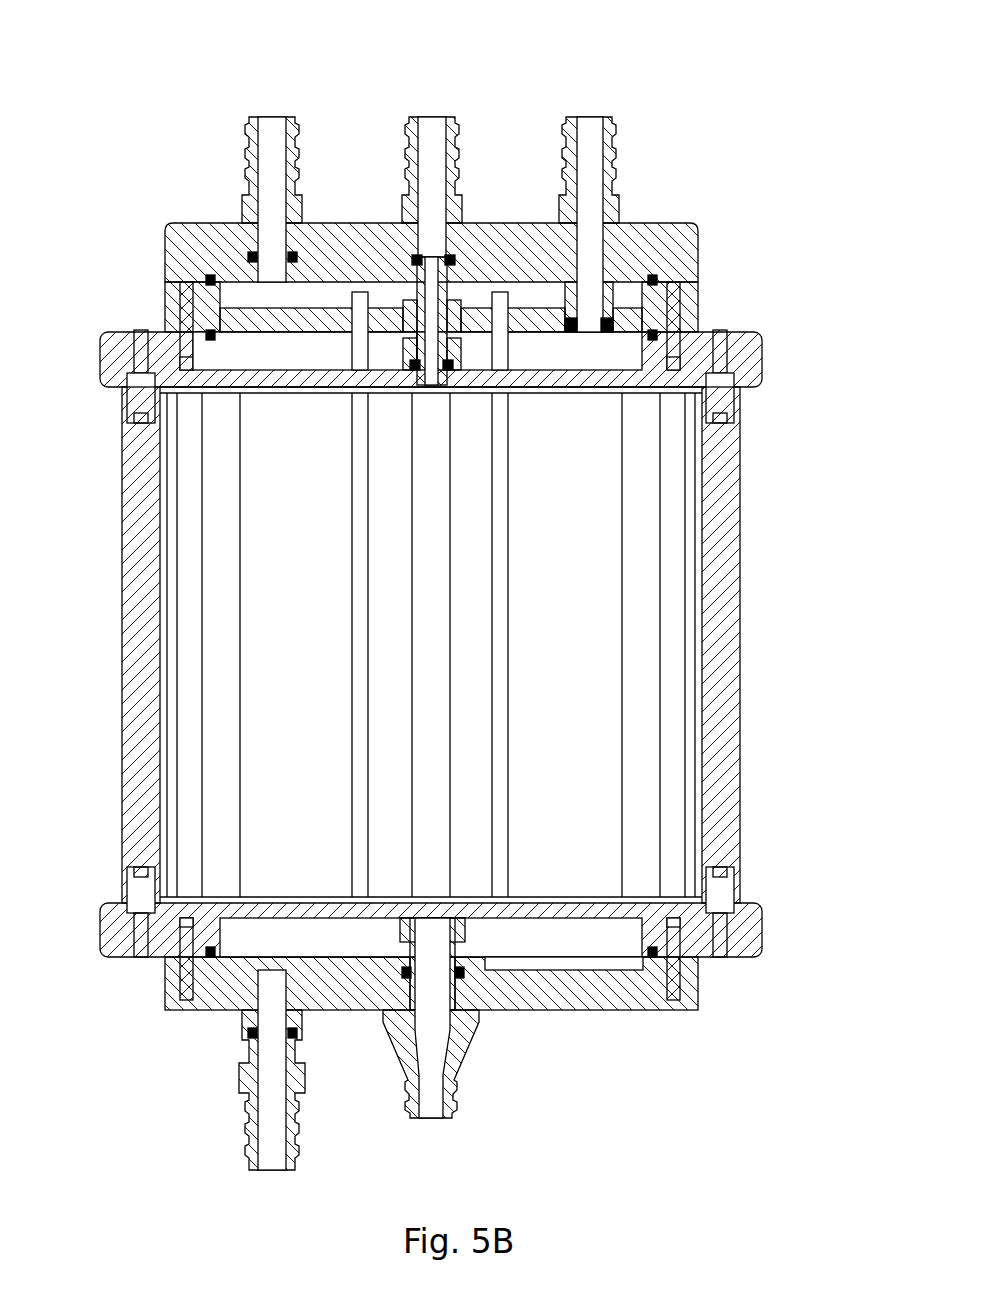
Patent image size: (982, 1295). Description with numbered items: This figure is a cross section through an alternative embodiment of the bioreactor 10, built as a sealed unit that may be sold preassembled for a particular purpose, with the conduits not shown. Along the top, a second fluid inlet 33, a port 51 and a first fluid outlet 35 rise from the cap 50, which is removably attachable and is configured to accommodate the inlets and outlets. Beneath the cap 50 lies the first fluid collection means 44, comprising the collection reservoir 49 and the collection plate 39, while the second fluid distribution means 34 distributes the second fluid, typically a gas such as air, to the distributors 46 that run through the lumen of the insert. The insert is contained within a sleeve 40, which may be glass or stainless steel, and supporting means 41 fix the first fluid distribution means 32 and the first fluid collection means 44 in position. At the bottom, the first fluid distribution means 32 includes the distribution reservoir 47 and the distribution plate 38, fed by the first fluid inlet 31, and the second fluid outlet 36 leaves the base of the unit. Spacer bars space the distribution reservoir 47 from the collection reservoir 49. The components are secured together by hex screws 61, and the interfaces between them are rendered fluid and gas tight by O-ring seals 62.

The bioreactor 10 is at (718, 142).
The first fluid inlet 31 is at (247, 1142).
The first fluid distribution means 32 is at (590, 933).
The second fluid inlet 33 is at (275, 117).
The second fluid distribution means 34 is at (653, 278).
The first fluid outlet 35 is at (590, 120).
The second fluid outlet 36 is at (457, 1098).
The distribution plate 38 is at (520, 880).
The collection plate 39 is at (227, 392).
The sleeve 40 is at (192, 660).
The supporting means 41 is at (745, 690).
The first fluid collection means 44 is at (624, 348).
The distributors 46 is at (510, 517).
The distribution reservoir 47 is at (178, 915).
The collection reservoir 49 is at (237, 353).
The cap 50 is at (182, 236).
The central port 51 is at (435, 125).
The hex screws 61 is at (745, 933).
The O-ring seals 62 is at (237, 300).